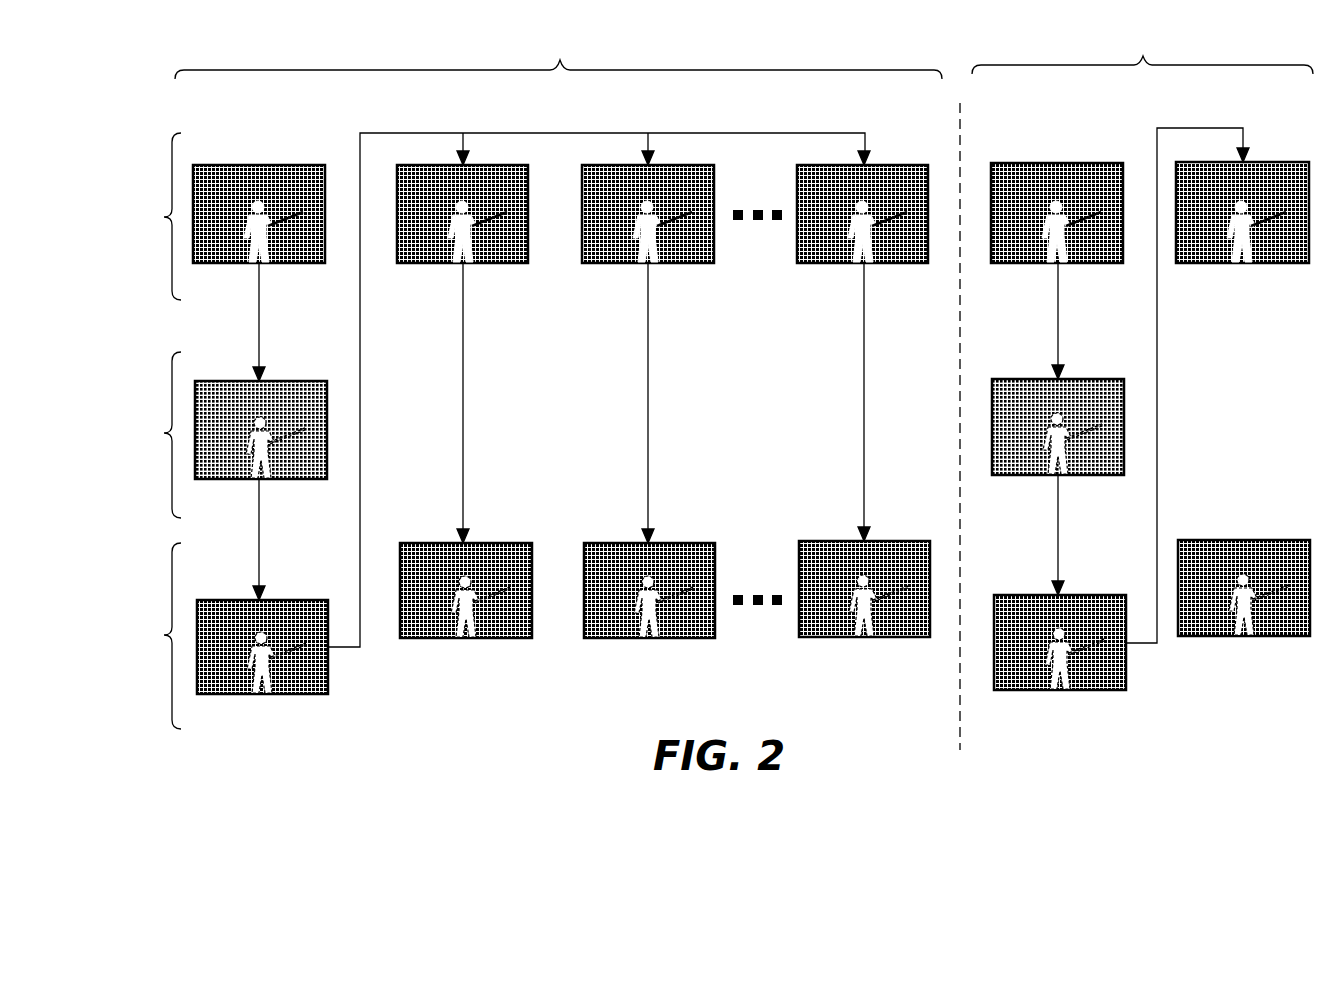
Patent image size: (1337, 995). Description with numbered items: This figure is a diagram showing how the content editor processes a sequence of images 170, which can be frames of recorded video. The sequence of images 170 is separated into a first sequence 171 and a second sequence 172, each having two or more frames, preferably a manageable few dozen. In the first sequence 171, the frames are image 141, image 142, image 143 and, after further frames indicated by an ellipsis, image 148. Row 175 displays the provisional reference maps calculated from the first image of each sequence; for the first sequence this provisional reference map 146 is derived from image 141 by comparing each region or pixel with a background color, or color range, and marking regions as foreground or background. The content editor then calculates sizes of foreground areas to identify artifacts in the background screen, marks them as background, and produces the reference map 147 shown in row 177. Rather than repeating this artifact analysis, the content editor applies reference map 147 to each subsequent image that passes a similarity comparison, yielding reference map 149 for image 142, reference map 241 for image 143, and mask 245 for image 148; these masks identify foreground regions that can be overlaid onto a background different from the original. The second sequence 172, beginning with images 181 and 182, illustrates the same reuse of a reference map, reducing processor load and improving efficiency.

The image 141 is at (271, 263).
The image 142 is at (476, 263).
The image 143 is at (661, 263).
The image 148 is at (876, 263).
The intermediate processed image 146 is at (279, 479).
The reference map 147 is at (287, 694).
The reference map 149 is at (484, 638).
The reference map 241 is at (677, 638).
The mask 245 is at (887, 637).
The sequence of images 170 is at (149, 216).
The row 175 is at (149, 435).
The output image row 177 is at (149, 636).
The first sequence 171 is at (558, 57).
The second sequence 172 is at (1142, 54).
The first application input image 181 is at (1070, 263).
The second application input image 182 is at (1256, 263).